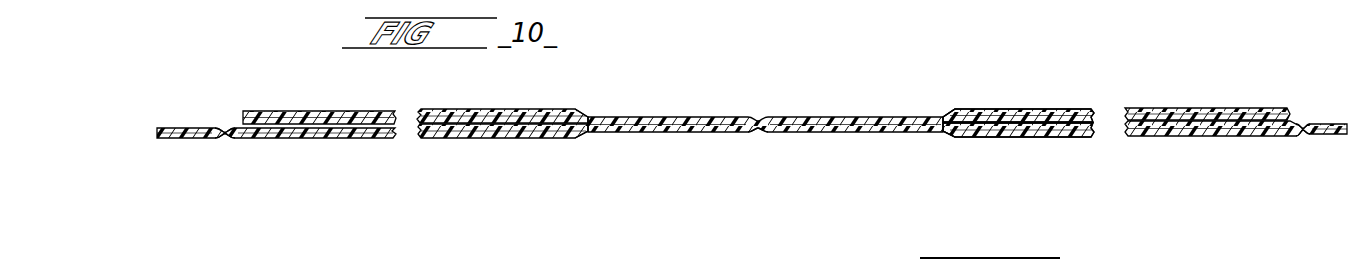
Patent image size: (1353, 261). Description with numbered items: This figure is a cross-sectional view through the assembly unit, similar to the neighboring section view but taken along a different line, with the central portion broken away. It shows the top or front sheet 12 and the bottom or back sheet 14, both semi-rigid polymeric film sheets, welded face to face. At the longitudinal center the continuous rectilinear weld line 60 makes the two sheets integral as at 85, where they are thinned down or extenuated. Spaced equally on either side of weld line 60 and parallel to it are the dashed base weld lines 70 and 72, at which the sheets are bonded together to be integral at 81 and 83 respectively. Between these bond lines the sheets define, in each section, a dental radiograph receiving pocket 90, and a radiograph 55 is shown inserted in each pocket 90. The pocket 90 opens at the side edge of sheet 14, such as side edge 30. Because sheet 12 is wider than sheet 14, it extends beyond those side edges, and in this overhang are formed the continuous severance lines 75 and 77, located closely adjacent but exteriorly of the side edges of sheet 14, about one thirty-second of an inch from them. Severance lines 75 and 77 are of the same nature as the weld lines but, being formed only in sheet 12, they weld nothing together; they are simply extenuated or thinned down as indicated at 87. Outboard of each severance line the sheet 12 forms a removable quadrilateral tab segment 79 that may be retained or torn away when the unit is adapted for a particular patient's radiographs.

The top or front sheet 12 is at (980, 133).
The bottom or back sheet 14 is at (993, 113).
The side edge of sheet 14 30 is at (1290, 108).
The radiograph 55 is at (485, 124).
The continuous rectilinear weld line 60 is at (758, 118).
The dashed base weld line 70 is at (591, 118).
The dashed base weld line 72 is at (927, 116).
The severance line 75 is at (1302, 137).
The severance line 77 is at (224, 139).
The tab segment 79 is at (180, 128).
The integral bond at weld line 70 81 is at (587, 133).
The integral bond at weld line 72 83 is at (925, 131).
The integral bond at weld line 60 85 is at (757, 131).
The thinned portion of severance line 87 is at (223, 128).
The dental radiograph receiving pocket 90 is at (528, 111).